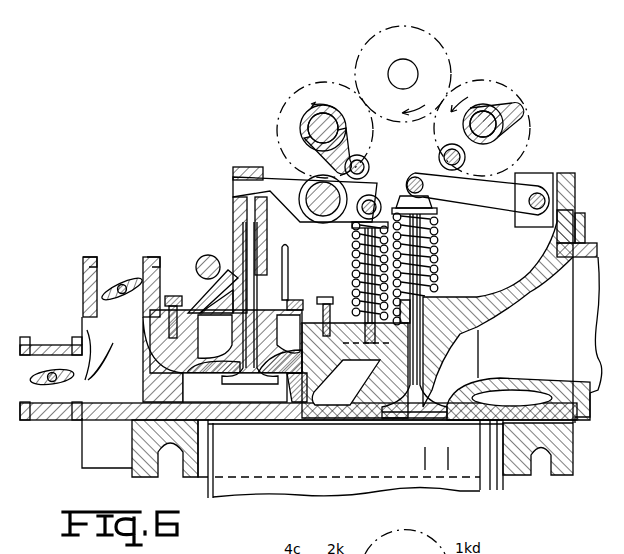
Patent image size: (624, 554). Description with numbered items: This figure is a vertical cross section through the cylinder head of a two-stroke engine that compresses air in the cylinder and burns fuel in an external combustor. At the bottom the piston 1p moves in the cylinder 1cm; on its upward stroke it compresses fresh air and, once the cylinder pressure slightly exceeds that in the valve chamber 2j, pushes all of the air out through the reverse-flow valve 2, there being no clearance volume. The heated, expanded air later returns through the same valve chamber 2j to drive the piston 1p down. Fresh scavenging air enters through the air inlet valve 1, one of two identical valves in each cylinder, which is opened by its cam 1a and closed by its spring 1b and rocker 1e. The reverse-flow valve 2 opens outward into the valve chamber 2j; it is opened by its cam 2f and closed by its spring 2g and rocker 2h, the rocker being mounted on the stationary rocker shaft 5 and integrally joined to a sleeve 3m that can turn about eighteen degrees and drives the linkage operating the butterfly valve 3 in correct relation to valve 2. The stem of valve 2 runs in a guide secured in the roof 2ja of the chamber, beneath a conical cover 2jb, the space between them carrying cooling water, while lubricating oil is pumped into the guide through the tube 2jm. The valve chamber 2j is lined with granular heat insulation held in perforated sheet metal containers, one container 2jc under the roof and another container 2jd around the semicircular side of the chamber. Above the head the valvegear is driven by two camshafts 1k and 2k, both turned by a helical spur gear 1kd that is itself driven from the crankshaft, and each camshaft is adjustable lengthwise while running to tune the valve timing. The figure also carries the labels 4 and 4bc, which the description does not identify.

The air inlet valve 1 is at (425, 400).
The cam 1a is at (512, 121).
The spring 1b is at (436, 264).
The cylinder 1cm is at (512, 468).
The rocker 1e is at (495, 204).
The camshaft 1k is at (485, 120).
The spur gear 1kd is at (360, 62).
The piston 1p is at (458, 468).
The reverse-flow valve 2 is at (250, 375).
The cam 2f is at (350, 138).
The spring 2g is at (353, 266).
The rocker 2h is at (371, 194).
The valve chamber 2j is at (218, 392).
The roof of valve chamber 2ja is at (213, 310).
The conical cover 2jb is at (196, 278).
The sheet metal container 2jc is at (205, 373).
The sheet metal container 2jd is at (302, 420).
The tube 2jm is at (288, 262).
The camshaft 2k is at (320, 118).
The valve 3 is at (62, 385).
The sleeve 3m is at (300, 210).
The intake pipe 4 is at (108, 292).
The shaft 4bc is at (207, 255).
The stationary rocker shaft 5 is at (314, 218).